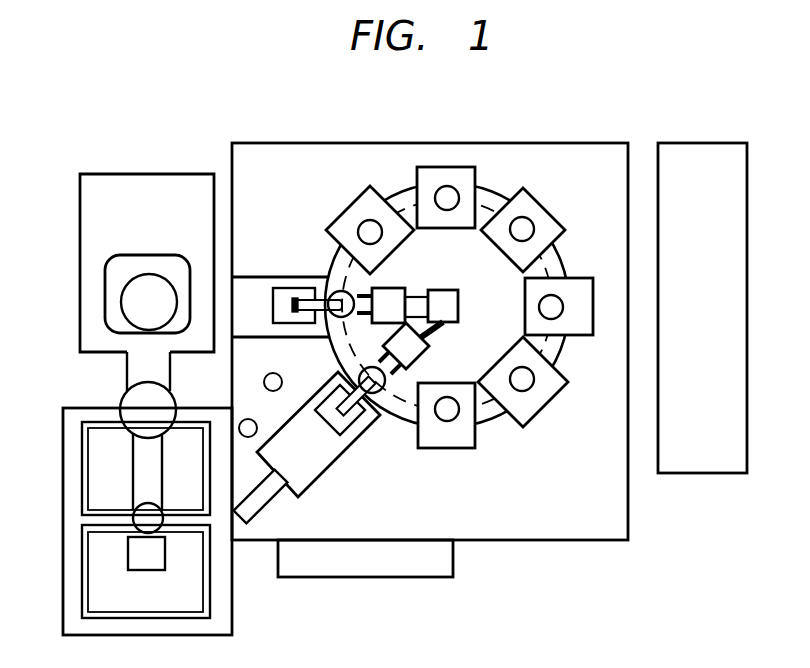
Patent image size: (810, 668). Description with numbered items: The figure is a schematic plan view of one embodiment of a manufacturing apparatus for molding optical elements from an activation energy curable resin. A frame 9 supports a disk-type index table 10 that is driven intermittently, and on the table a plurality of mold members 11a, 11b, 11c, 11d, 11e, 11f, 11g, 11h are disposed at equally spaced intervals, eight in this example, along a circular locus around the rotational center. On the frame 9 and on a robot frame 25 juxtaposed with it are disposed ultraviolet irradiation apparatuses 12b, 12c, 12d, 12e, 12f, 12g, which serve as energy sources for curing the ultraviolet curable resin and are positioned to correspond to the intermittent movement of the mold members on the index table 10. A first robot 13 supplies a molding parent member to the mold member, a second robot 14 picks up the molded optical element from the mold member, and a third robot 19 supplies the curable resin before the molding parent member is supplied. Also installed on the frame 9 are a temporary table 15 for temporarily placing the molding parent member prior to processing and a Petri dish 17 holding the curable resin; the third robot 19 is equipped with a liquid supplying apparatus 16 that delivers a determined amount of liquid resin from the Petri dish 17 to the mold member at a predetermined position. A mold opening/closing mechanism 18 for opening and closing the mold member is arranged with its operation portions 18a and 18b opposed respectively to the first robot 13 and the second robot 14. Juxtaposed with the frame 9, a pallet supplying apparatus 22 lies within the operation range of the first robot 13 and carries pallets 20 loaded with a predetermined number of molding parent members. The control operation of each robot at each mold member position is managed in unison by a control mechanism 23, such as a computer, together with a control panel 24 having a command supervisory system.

The frame 9 is at (620, 518).
The index table 10 is at (490, 195).
The mold member 11a is at (385, 395).
The mold member 11b is at (456, 412).
The mold member 11c is at (526, 378).
The mold member 11d is at (554, 305).
The mold member 11e is at (527, 226).
The mold member 11f is at (447, 195).
The mold member 11g is at (362, 222).
The mold member 11h is at (334, 292).
The ultraviolet irradiation apparatus 12b is at (452, 448).
The ultraviolet irradiation apparatus 12c is at (548, 413).
The ultraviolet irradiation apparatus 12d is at (584, 312).
The ultraviolet irradiation apparatus 12e is at (532, 205).
The ultraviolet irradiation apparatus 12f is at (425, 173).
The ultraviolet irradiation apparatus 12g is at (366, 190).
The first robot 13 is at (315, 463).
The second robot 14 is at (268, 277).
The temporary table 15 is at (245, 418).
The liquid supplying apparatus 16 is at (132, 558).
The Petri dish 17 is at (278, 373).
The mold opening/closing mechanism 18 is at (461, 300).
The operation portion 18a is at (408, 351).
The operation portion 18b is at (395, 300).
The third robot 19 is at (127, 373).
The pallet 20 is at (103, 457).
The pallet supplying apparatus 22 is at (223, 604).
The control mechanism 23 is at (694, 143).
The control panel 24 is at (432, 565).
The robot frame 25 is at (80, 212).